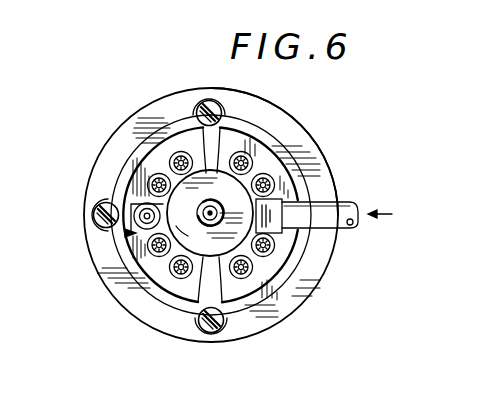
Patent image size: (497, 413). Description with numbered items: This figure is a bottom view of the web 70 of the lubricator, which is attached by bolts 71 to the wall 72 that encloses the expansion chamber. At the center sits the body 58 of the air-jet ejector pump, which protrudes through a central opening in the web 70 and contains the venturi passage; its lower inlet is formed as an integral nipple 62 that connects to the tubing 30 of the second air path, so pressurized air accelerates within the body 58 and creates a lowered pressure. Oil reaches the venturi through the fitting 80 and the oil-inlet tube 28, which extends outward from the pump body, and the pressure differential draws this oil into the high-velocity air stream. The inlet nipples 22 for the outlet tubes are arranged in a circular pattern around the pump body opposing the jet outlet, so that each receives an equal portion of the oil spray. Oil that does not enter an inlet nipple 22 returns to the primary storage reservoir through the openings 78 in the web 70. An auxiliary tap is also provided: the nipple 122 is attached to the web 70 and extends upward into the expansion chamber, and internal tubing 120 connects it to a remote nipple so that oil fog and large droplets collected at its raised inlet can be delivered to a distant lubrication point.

The inlet nipples 22 is at (159, 258).
The oil-inlet tube 28 is at (354, 204).
The tubing 30 is at (208, 223).
The body 58 is at (178, 217).
The nipple 62 is at (210, 204).
The web 70 is at (214, 136).
The bolts 71 is at (198, 105).
The wall 72 is at (300, 140).
The openings 78 is at (160, 147).
The fitting 80 is at (271, 200).
The internal tubing 120 is at (128, 204).
The nipple 122 is at (126, 233).